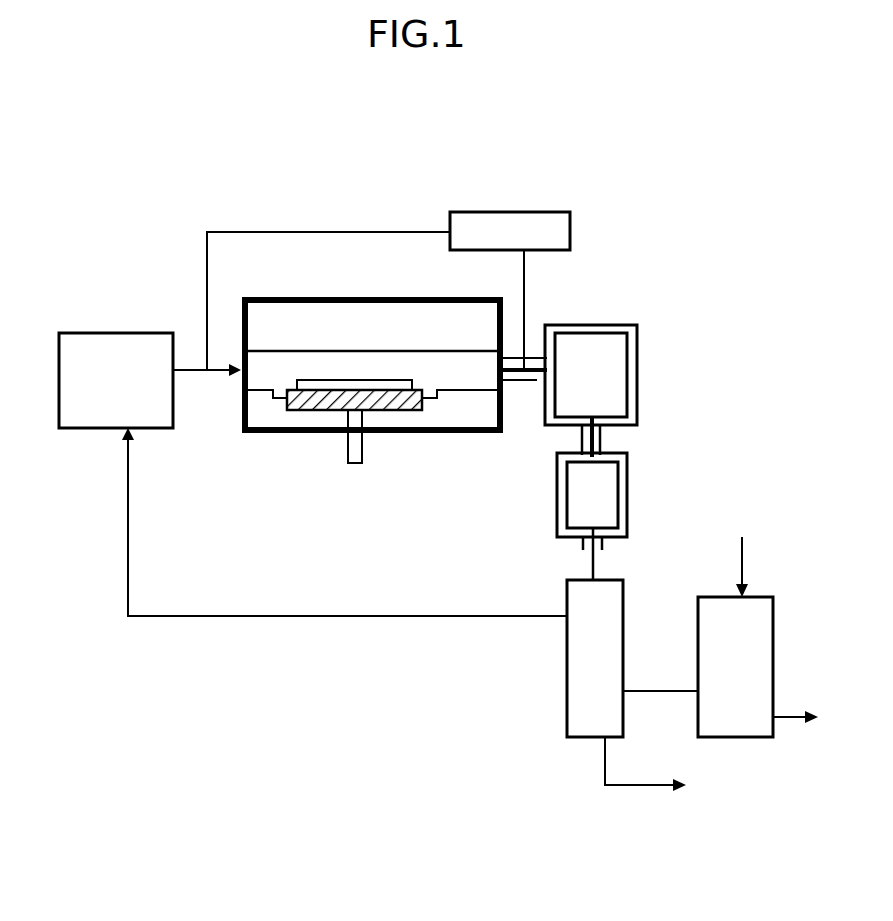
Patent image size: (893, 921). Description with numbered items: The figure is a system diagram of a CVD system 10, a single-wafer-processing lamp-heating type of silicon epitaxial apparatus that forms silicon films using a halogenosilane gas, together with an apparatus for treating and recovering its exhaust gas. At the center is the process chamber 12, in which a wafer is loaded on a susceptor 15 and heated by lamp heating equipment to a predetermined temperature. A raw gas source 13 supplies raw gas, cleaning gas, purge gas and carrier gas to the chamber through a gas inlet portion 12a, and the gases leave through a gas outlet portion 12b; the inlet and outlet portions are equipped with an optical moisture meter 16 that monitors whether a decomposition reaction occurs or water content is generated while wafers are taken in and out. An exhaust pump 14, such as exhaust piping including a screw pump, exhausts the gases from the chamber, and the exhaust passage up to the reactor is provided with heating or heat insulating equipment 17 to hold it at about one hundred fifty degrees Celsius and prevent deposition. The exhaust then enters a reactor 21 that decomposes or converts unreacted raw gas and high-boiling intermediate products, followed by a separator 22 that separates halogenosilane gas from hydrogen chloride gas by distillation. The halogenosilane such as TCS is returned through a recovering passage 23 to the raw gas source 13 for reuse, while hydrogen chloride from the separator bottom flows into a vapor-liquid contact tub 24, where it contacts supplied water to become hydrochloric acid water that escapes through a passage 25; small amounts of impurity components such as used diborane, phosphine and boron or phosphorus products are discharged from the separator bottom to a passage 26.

The CVD system 10 is at (249, 223).
The process chamber 12 is at (310, 437).
The gas inlet portion 12a is at (217, 373).
The gas outlet portion 12b is at (538, 383).
The raw gas source 13 is at (153, 332).
The exhaust pump 14 is at (622, 375).
The susceptor 15 is at (397, 408).
The moisture meter 16 is at (543, 212).
The heat insulating equipment 17 is at (627, 323).
The reactor 21 is at (608, 493).
The separator 22 is at (567, 702).
The recovering passage 23 is at (340, 613).
The vapor-liquid contact tub 24 is at (712, 597).
The passage 25 is at (790, 713).
The passage 26 is at (647, 783).